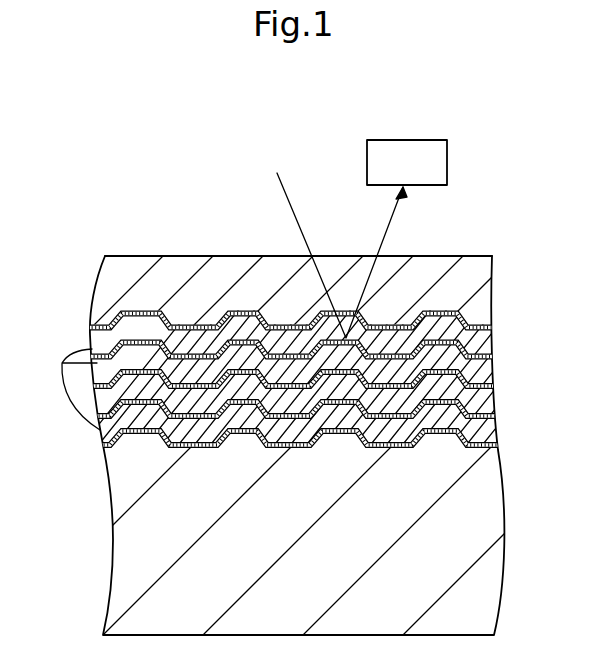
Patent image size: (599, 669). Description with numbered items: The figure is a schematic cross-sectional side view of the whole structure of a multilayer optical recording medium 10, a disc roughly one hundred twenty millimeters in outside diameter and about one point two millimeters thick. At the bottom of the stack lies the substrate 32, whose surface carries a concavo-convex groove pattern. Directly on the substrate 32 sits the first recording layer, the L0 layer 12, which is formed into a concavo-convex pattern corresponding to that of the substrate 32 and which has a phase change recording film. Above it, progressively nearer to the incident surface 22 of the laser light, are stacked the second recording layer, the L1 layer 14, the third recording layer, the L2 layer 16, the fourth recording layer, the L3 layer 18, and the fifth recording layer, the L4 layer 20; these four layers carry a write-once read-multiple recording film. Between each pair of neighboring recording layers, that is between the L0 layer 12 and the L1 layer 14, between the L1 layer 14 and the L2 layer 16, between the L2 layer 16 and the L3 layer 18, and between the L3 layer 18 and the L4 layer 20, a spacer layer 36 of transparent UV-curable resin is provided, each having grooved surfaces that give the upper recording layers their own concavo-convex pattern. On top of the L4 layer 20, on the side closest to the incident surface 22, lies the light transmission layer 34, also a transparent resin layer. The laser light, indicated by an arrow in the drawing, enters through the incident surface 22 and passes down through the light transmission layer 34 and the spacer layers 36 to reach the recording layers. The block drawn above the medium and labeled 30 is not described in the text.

The multilayer optical recording medium 10 is at (240, 137).
The first recording layer (L0 layer) 12 is at (485, 443).
The second recording layer (L1 layer) 14 is at (488, 413).
The third recording layer (L2 layer) 16 is at (482, 387).
The fourth recording layer (L3 layer) 18 is at (478, 357).
The fifth recording layer (L4 layer) 20 is at (482, 327).
The incident surface 22 is at (124, 256).
The detector / sensor 30 is at (427, 160).
The substrate 32 is at (487, 595).
The light transmission layer 34 is at (475, 273).
The spacer layer 36 is at (65, 389).